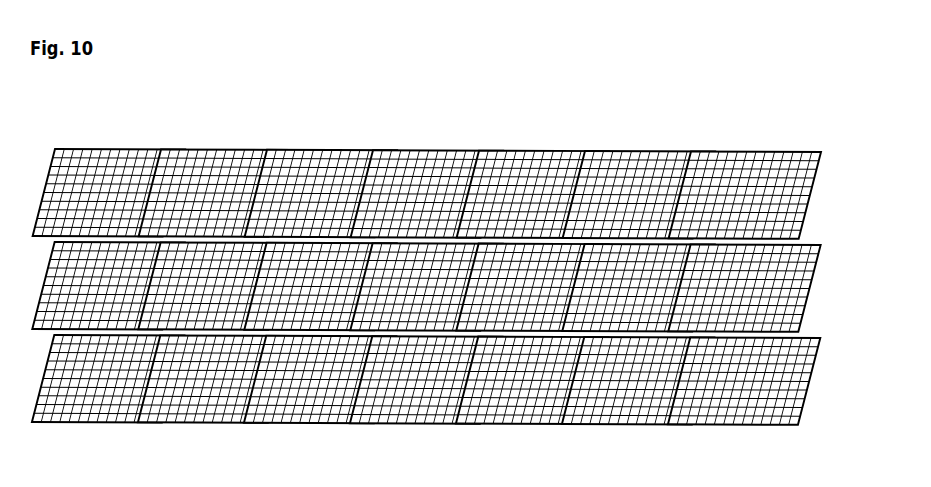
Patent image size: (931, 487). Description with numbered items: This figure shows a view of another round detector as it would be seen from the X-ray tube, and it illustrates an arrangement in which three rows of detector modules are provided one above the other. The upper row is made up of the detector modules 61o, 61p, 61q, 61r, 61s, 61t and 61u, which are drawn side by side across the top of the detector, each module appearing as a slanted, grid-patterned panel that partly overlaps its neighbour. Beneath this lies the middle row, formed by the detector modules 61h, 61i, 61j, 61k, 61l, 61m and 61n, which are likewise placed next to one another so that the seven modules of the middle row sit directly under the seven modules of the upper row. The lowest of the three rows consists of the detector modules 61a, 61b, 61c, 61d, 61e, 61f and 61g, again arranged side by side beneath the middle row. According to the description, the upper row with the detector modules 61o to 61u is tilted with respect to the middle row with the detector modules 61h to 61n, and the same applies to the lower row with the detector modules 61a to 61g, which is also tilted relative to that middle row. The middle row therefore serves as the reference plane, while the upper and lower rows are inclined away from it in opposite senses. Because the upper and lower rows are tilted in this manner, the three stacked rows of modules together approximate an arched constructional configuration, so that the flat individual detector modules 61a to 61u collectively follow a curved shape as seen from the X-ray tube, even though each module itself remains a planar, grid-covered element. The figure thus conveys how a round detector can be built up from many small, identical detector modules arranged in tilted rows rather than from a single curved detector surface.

The detector module 61a is at (97, 418).
The detector module 61b is at (204, 418).
The detector module 61c is at (311, 418).
The detector module 61d is at (418, 418).
The detector module 61e is at (525, 418).
The detector module 61f is at (632, 418).
The detector module 61g is at (736, 418).
The detector module 61h is at (74, 300).
The detector module 61i is at (183, 300).
The detector module 61j is at (290, 300).
The detector module 61k is at (395, 300).
The detector module 61l is at (504, 300).
The detector module 61m is at (607, 300).
The detector module 61n is at (718, 300).
The detector module 61o is at (113, 150).
The detector module 61p is at (219, 150).
The detector module 61q is at (325, 150).
The detector module 61r is at (431, 150).
The detector module 61s is at (537, 150).
The detector module 61t is at (643, 150).
The detector module 61u is at (749, 150).